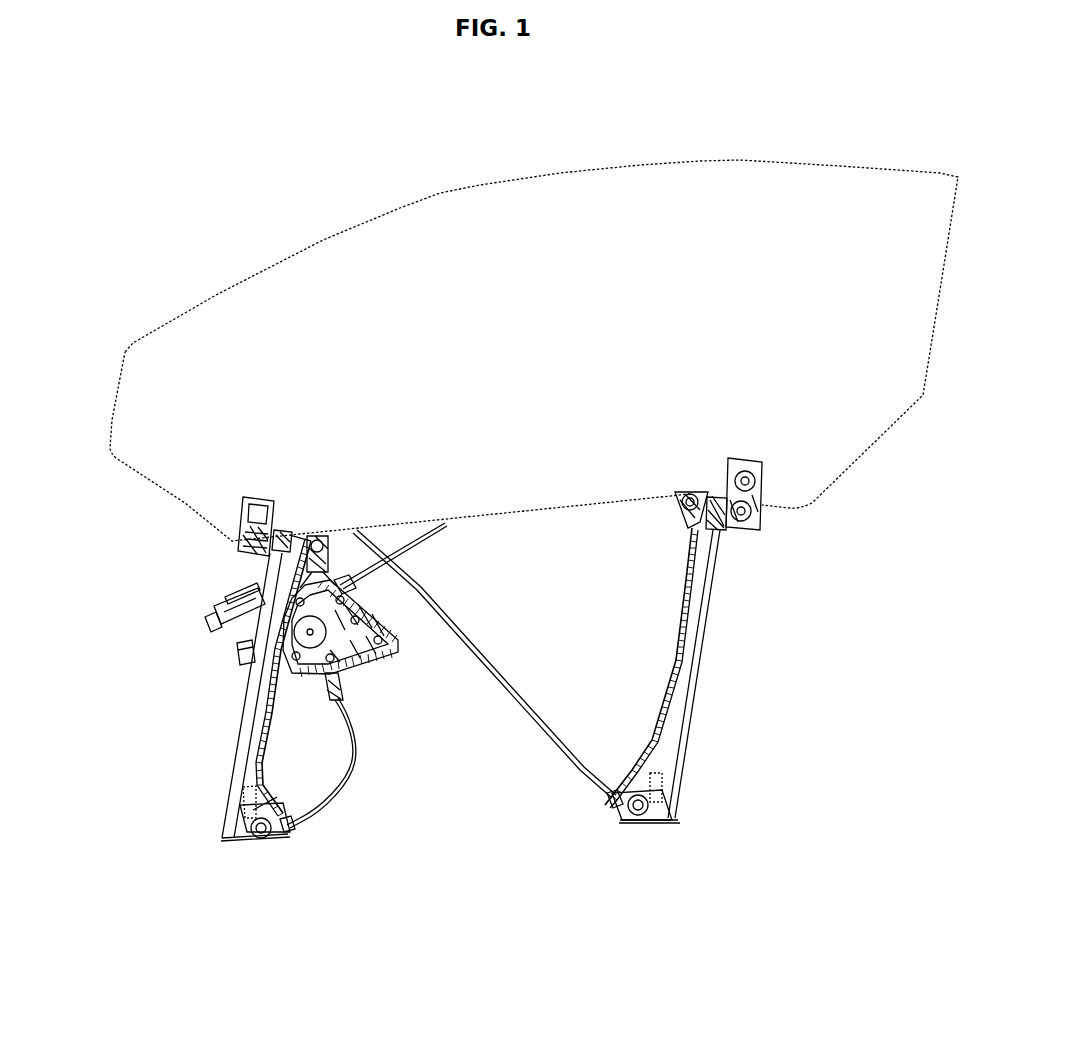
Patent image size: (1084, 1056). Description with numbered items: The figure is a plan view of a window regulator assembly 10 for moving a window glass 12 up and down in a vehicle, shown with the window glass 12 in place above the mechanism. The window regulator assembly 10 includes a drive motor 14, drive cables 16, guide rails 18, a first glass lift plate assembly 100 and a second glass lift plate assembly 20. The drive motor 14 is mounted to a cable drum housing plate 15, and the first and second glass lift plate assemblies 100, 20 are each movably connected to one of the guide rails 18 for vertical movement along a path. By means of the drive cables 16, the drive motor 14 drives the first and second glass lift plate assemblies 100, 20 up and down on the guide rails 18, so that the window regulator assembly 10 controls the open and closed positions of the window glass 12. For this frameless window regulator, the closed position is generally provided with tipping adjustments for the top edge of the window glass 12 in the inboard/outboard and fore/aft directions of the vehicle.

The window regulator assembly 10 is at (145, 536).
The window glass 12 is at (650, 225).
The drive motor 14 is at (218, 630).
The cable drum housing plate 15 is at (378, 716).
The drive cables 16 is at (523, 715).
The guide rails 18 is at (252, 738).
The second glass lift plate assembly 20 is at (238, 540).
The first glass lift plate assembly 100 is at (758, 508).